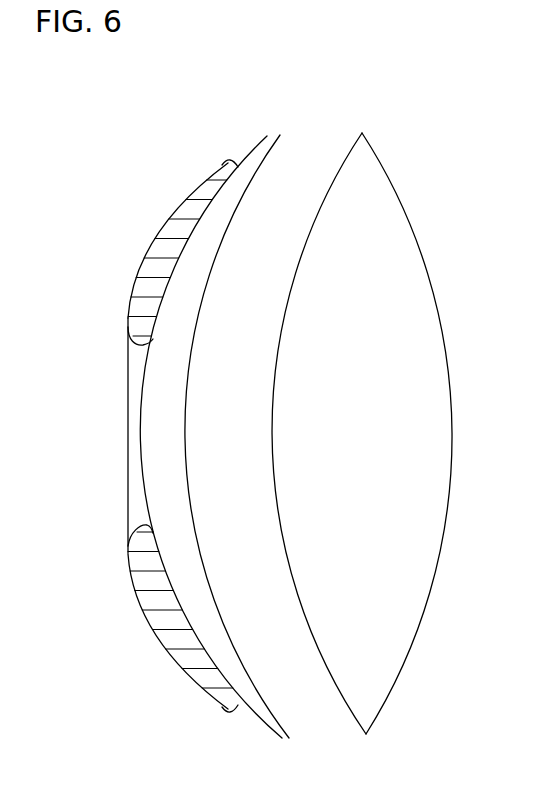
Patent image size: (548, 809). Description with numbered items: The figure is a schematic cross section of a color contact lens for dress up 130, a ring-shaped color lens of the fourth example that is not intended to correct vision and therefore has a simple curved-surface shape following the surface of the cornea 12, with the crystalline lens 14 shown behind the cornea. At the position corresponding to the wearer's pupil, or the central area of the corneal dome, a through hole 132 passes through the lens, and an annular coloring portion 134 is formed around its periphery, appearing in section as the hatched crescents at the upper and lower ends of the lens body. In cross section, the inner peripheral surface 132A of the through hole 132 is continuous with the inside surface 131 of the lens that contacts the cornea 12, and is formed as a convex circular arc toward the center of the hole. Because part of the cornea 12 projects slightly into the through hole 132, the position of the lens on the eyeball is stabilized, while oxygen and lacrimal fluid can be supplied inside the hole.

The cornea 12 is at (259, 708).
The crystalline lens 14 is at (415, 272).
The color contact lens for dress up 130 is at (177, 148).
The inside surface 131 is at (165, 302).
The through hole 132 is at (135, 502).
The inner peripheral surface 132A is at (141, 345).
The annular coloring portion 134 is at (160, 251).